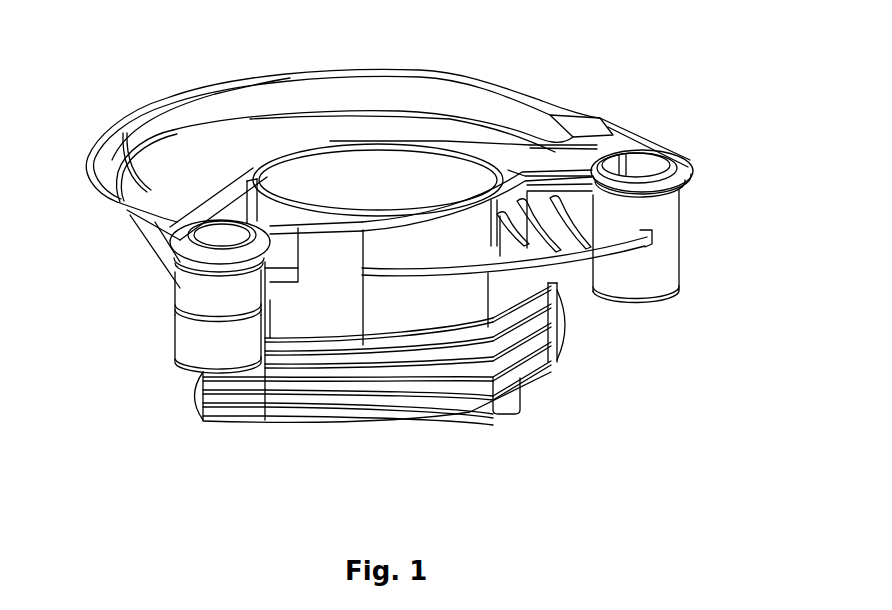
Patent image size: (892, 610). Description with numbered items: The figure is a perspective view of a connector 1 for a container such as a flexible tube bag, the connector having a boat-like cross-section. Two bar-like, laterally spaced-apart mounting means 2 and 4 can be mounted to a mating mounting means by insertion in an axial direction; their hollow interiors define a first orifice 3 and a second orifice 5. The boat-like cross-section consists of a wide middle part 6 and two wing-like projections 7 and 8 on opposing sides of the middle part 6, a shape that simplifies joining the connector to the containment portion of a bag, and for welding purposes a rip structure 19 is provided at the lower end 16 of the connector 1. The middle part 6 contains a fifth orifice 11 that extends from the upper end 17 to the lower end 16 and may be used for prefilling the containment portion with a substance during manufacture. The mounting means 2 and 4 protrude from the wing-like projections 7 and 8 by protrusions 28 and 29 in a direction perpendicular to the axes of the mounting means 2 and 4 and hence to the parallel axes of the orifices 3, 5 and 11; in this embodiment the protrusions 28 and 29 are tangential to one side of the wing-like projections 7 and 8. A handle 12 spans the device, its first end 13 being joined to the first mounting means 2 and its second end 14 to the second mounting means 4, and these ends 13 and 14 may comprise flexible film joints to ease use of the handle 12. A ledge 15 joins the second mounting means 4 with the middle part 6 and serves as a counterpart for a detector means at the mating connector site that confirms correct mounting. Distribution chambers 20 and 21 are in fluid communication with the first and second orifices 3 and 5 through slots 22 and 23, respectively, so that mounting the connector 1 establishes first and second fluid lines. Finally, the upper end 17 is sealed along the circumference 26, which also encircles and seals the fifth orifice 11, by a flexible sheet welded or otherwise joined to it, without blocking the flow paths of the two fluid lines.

The connector 1 is at (183, 80).
The first mounting means 2 is at (210, 343).
The first orifice 3 is at (227, 235).
The second mounting means 4 is at (645, 275).
The second orifice 5 is at (645, 163).
The middle part 6 is at (413, 325).
The wing-like projection 7 is at (510, 283).
The wing-like projection 8 is at (298, 318).
The fifth orifice 11 is at (369, 168).
The handle 12 is at (297, 88).
The first end 13 is at (130, 203).
The second end 14 is at (590, 124).
The ledge 15 is at (498, 258).
The lower end 16 is at (420, 423).
The upper end 17 is at (247, 180).
The rip structure 19 is at (317, 400).
The distribution chamber 20 is at (243, 203).
The distribution chamber 21 is at (512, 155).
The slot 22 is at (621, 160).
The slot 23 is at (190, 230).
The circumference 26 is at (492, 172).
The protrusion 28 is at (266, 382).
The protrusion 29 is at (618, 193).